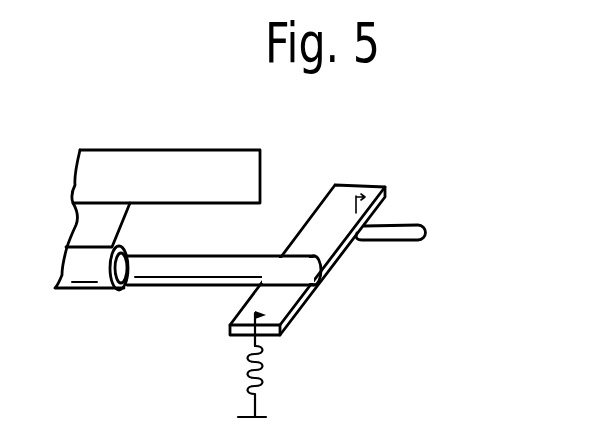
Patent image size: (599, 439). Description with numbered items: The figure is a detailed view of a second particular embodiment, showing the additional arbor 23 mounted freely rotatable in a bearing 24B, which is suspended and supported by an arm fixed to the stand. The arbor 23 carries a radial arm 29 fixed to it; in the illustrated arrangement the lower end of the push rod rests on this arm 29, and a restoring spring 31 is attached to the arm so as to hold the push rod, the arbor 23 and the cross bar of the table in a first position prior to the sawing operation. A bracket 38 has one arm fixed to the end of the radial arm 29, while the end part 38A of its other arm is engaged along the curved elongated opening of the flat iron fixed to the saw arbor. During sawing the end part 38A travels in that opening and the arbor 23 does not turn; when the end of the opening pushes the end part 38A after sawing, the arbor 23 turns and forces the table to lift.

The bearing 24B is at (92, 273).
The additional arbor 23 is at (176, 266).
The radial arm 29 is at (304, 242).
The end part 38A is at (427, 227).
The bracket 38 is at (393, 243).
The restoring spring 31 is at (268, 373).